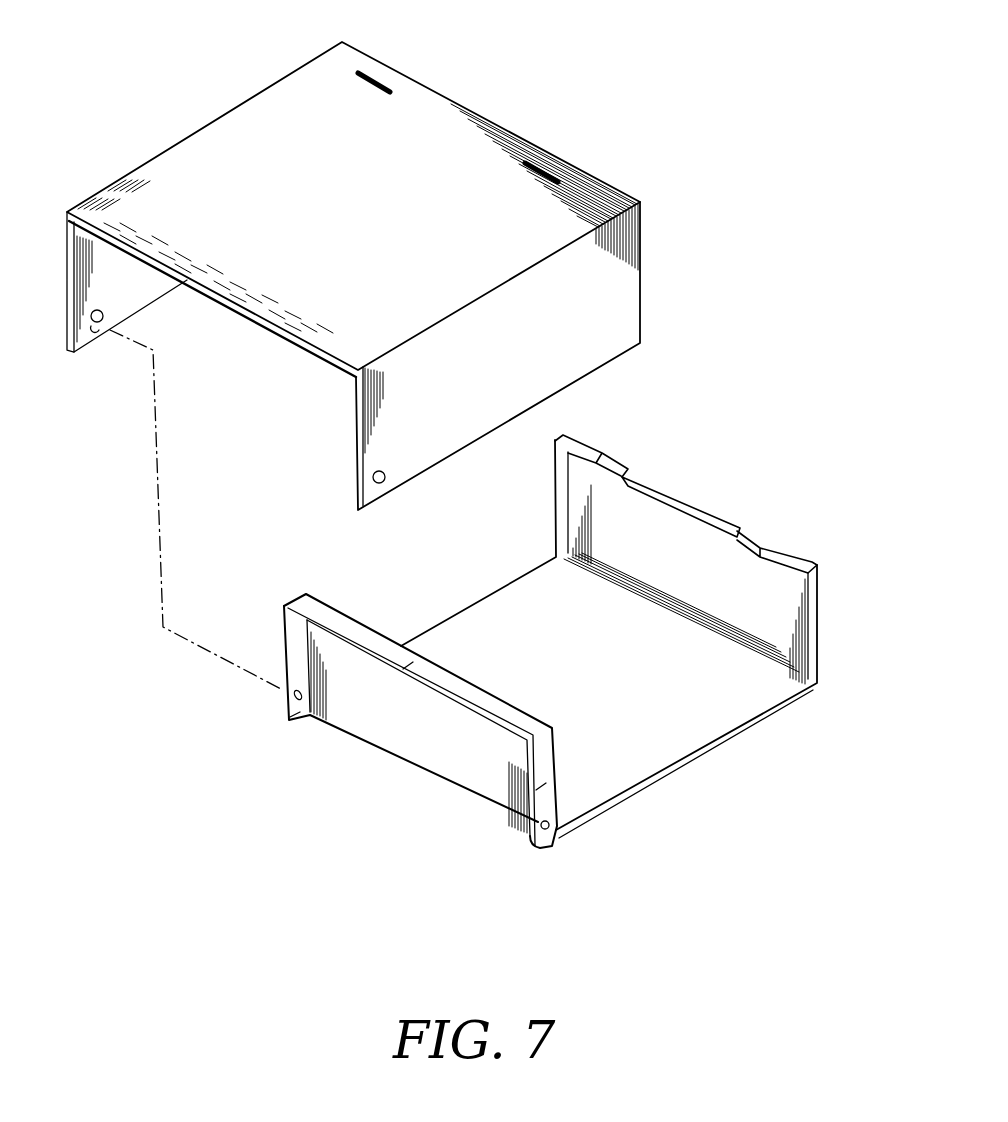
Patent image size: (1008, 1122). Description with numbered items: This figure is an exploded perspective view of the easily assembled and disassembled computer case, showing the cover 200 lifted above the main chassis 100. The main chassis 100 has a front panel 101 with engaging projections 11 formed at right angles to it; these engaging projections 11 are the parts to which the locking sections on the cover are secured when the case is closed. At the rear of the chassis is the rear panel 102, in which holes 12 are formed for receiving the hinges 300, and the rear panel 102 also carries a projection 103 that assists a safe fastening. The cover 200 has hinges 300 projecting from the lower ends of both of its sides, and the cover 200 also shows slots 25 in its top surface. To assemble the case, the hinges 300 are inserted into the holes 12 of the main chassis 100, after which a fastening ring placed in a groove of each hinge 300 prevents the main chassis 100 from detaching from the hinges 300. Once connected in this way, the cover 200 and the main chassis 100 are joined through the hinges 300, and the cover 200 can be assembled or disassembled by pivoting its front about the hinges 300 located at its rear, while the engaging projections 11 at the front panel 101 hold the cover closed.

The slots 25 is at (385, 82).
The cover 200 is at (622, 285).
The hinges 300 is at (87, 350).
The engaging projections 11 is at (587, 450).
The front panel 101 is at (763, 545).
The main chassis 100 is at (745, 687).
The rear panel 102 is at (433, 753).
The projection 103 is at (297, 660).
The holes 12 is at (287, 703).